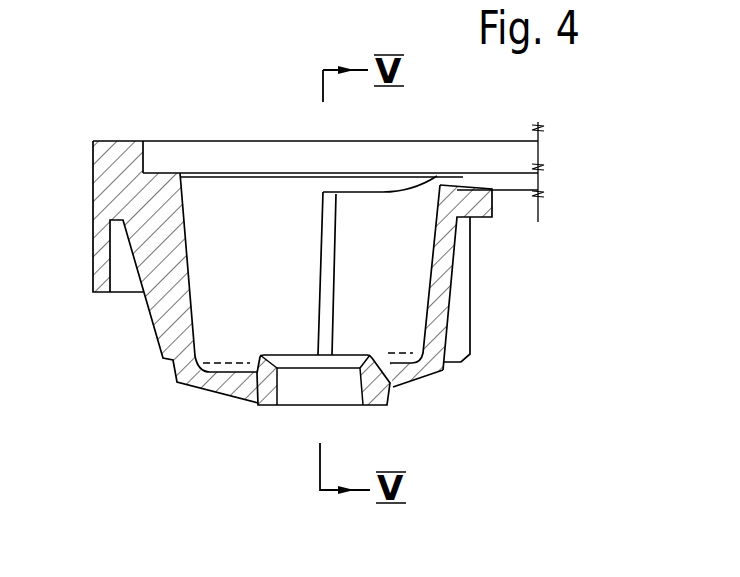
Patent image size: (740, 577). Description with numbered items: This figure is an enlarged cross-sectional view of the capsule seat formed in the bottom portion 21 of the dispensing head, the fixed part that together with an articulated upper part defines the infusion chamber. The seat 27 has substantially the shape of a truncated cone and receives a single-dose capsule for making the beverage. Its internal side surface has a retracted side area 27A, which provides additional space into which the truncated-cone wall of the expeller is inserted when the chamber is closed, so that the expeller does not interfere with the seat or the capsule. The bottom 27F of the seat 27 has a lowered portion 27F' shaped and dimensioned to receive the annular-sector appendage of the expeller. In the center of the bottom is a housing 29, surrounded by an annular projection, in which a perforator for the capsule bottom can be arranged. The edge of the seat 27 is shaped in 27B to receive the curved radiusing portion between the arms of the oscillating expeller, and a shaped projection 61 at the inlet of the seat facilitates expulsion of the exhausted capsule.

The first portion 21 is at (94, 117).
The seat 27 is at (410, 258).
The retracted side area 27A is at (279, 272).
The shaped edge of the seat 27B is at (147, 155).
The bottom of the seat 27F is at (401, 351).
The lowered portion 27F' is at (259, 357).
The housing 29 is at (282, 386).
The shaped projection 61 is at (437, 176).